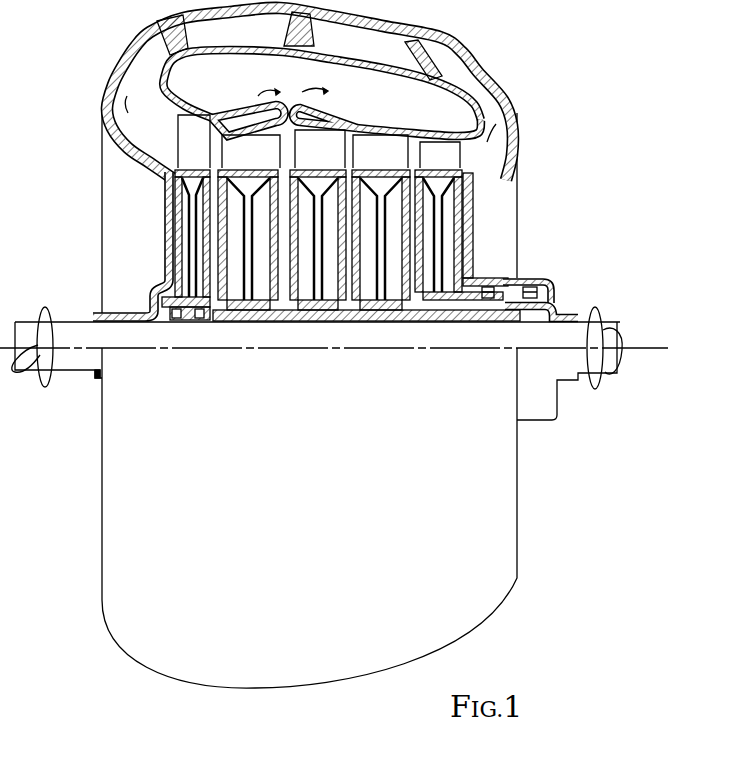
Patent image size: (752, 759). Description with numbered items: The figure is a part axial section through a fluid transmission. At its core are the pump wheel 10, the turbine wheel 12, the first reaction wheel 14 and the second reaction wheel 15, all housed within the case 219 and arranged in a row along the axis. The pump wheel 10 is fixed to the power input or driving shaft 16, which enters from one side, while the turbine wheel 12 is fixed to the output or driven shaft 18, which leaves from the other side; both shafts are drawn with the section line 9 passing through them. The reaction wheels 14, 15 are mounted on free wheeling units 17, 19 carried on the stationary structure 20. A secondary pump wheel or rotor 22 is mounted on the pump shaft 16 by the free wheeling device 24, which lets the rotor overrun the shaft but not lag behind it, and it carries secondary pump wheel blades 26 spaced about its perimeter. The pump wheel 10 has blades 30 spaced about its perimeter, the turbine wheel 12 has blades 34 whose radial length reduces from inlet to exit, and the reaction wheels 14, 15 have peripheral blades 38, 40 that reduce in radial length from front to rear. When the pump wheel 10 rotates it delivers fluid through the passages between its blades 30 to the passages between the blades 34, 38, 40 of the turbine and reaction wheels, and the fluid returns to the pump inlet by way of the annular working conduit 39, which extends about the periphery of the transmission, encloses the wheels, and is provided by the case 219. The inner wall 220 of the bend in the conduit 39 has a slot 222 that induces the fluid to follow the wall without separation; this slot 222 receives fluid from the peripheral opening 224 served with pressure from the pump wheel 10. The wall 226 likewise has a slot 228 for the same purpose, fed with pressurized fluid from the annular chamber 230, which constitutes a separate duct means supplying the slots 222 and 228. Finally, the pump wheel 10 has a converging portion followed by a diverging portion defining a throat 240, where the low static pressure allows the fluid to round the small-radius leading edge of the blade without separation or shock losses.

The section line 9- 9 is at (322, 146).
The pump wheel 10 is at (238, 298).
The turbine wheel 12 is at (310, 298).
The first reaction wheel 14 is at (370, 296).
The second reaction wheel 15 is at (430, 290).
The driving shaft 16 is at (72, 330).
The free wheeling unit 17 is at (484, 285).
The driven shaft 18 is at (600, 330).
The free wheeling unit 19 is at (543, 280).
The stationary structure 20 is at (512, 280).
The secondary pump wheel 22 is at (192, 323).
The free wheeling device 24 is at (162, 307).
The secondary pump wheel blades 26 is at (192, 206).
The pump wheel blades 30 is at (249, 217).
The turbine wheel blades 34 is at (318, 215).
The reaction wheel blades 38 is at (381, 217).
The annular working conduit 39 is at (299, 46).
The reaction wheel blades 40 is at (438, 217).
The case 219 is at (519, 127).
The inner wall 220 is at (470, 72).
The slot 222 is at (481, 100).
The peripheral opening 224 is at (296, 92).
The wall 226 is at (162, 65).
The slot 228 is at (160, 100).
The annular chamber 230 is at (232, 89).
The throat 240 is at (203, 180).